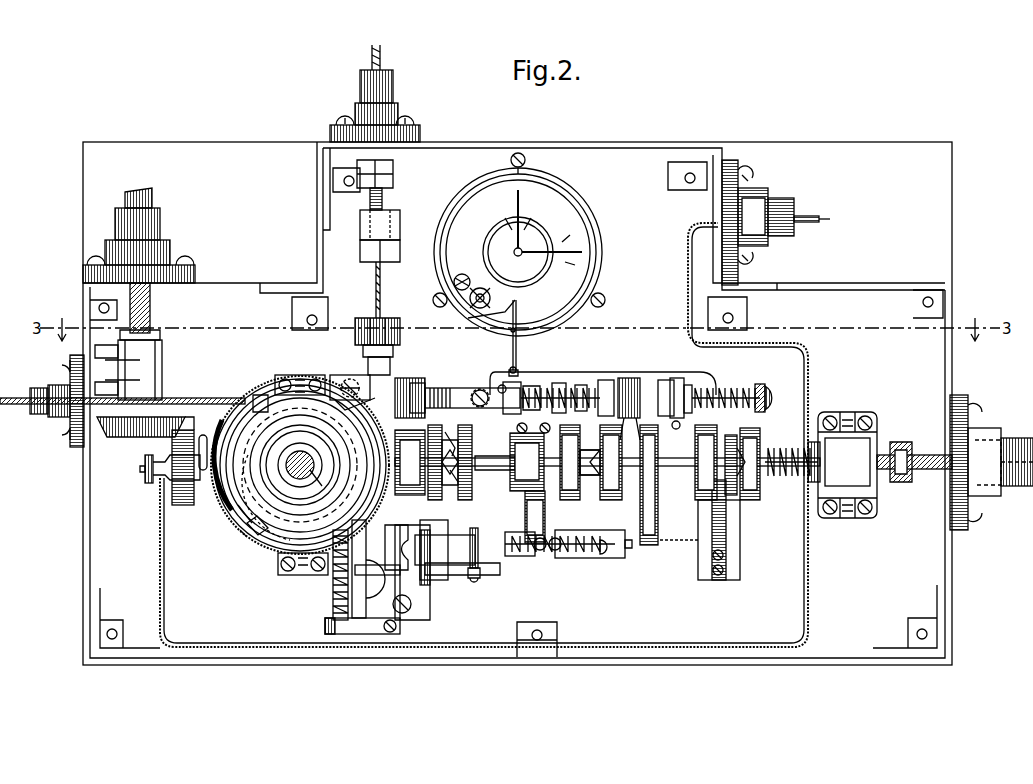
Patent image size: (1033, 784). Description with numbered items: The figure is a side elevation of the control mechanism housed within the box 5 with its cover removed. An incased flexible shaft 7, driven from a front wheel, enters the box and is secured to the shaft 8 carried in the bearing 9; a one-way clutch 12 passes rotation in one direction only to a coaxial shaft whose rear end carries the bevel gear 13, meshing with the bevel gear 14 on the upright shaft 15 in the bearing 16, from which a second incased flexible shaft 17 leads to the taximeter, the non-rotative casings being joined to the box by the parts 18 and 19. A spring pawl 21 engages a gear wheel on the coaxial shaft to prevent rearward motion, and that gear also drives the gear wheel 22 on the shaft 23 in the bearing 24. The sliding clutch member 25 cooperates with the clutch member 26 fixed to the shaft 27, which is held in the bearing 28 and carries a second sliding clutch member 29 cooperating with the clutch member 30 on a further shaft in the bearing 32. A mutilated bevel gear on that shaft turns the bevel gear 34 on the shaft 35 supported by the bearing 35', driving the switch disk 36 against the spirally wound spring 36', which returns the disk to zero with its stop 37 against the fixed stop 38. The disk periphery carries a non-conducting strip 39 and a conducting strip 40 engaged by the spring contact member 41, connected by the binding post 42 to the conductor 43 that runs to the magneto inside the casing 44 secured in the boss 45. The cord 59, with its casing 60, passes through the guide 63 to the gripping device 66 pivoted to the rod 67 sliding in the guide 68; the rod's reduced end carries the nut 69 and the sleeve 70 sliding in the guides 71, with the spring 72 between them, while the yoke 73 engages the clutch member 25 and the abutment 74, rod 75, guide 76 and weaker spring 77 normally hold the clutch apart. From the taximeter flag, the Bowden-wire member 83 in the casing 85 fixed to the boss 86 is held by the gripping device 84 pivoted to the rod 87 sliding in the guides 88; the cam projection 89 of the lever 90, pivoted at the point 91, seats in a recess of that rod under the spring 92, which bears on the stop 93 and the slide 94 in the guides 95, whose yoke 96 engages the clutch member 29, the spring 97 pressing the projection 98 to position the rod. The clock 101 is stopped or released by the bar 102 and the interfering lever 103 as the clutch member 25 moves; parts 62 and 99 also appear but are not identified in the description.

The box 5 is at (612, 146).
The incased flexible shaft 7 is at (1012, 440).
The shaft 8 is at (930, 455).
The bearing 9 is at (821, 465).
The one-way clutch 12 is at (760, 495).
The bevel gear 13 is at (192, 428).
The bevel gear 14 is at (125, 437).
The upwardly extending shaft 15 is at (150, 310).
The bearing 16 is at (162, 360).
The incased flexible shaft 17 is at (152, 196).
The casing connecting part 18 is at (982, 430).
The casing connecting part 19 is at (170, 250).
The spring pawl 21 is at (728, 536).
The gear wheel 22 is at (705, 432).
The shaft 23 is at (590, 476).
The bearing 24 is at (652, 545).
The clutch member 25 is at (614, 500).
The clutch member 26 is at (578, 448).
The shaft 27 is at (498, 470).
The bearing 28 is at (545, 516).
The clutch member 29 is at (470, 440).
The clutch member 30 is at (445, 500).
The bearing 32 is at (410, 462).
The bevel gear 34 is at (225, 503).
The shaft 35 is at (300, 465).
The bearing 35' is at (300, 575).
The switch disk 36 is at (248, 542).
The spirally wound spring 36' is at (221, 549).
The stop 37 is at (348, 375).
The fixed stop 38 is at (300, 375).
The strip of non-conducting material 39 is at (232, 520).
The strip of conducting material 40 is at (272, 548).
The spring contact member 41 is at (204, 434).
The binding post 42 is at (148, 484).
The electric conductor 43 is at (160, 575).
The casing 44 is at (795, 212).
The boss 45 is at (760, 195).
The cord 59 is at (212, 398).
The casing 60 is at (38, 414).
The collar 62 is at (60, 414).
The guide 63 is at (260, 395).
The gripping device 66 is at (450, 386).
The rod 67 is at (528, 388).
The guide 68 is at (565, 385).
The nut 69 is at (772, 390).
The sleeve 70 is at (680, 380).
The guides 71 is at (606, 380).
The spring 72 is at (712, 388).
The yoke 73 is at (630, 378).
The abutment 74 is at (690, 385).
The rod 75 is at (589, 395).
The guide 76 is at (505, 392).
The coiled spring 77 is at (540, 392).
The movable member of Bowden wire mechanism 83 is at (377, 284).
The gripping device 84 is at (390, 366).
The casing 85 is at (394, 86).
The boss 86 is at (400, 110).
The rod 87 is at (369, 569).
The guides 88 is at (375, 558).
The cam projection 89 is at (396, 547).
The lever 90 is at (420, 593).
The pivot point 91 is at (406, 613).
The spring 92 is at (548, 556).
The stop 93 is at (625, 556).
The slide 94 is at (487, 574).
The guides 95 is at (432, 566).
The yoke 96 is at (445, 550).
The spring 97 is at (333, 592).
The projection 98 is at (355, 636).
The nut 99 is at (388, 330).
The clock or time recording device 101 is at (585, 205).
The bar 102 is at (493, 300).
The interfering lever 103 is at (508, 342).